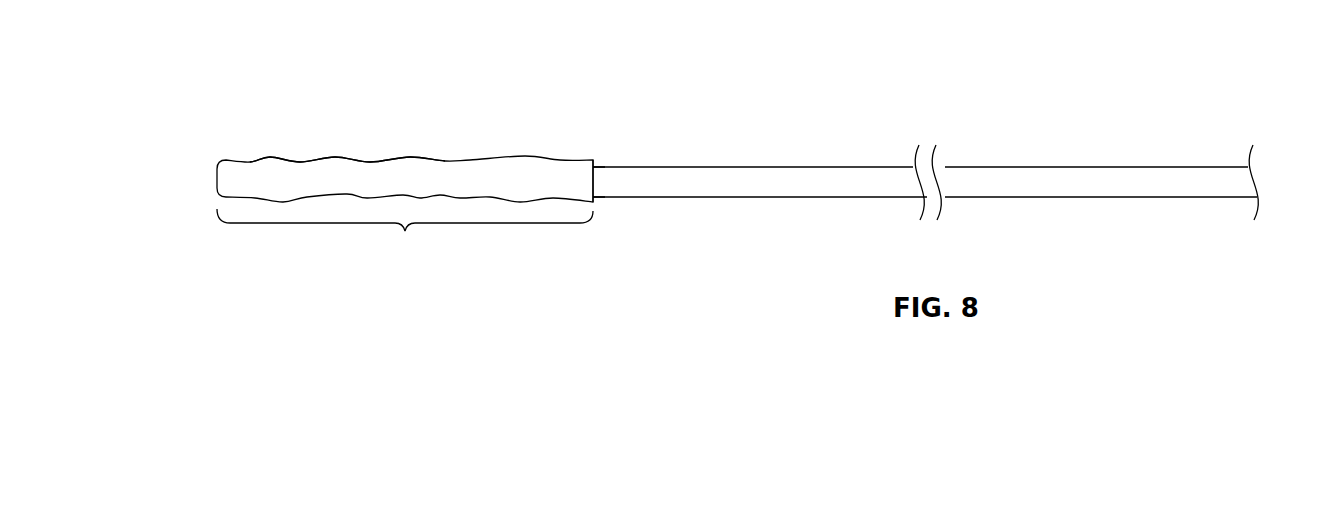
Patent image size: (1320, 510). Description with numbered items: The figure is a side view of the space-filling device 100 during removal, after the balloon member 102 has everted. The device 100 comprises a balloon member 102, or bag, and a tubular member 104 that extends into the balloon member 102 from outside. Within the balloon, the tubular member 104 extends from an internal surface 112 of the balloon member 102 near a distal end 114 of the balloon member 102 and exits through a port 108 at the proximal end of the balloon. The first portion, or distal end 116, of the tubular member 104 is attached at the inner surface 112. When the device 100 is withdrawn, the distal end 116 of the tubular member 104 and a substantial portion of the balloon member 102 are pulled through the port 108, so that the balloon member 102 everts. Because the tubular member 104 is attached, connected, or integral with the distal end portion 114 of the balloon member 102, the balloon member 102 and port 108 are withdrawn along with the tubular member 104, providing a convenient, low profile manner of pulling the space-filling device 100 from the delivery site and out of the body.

The space-filling device 100 is at (289, 100).
The balloon member 102 is at (405, 237).
The tubular member 104 is at (734, 167).
The port 108 is at (211, 199).
The internal surface 112 is at (388, 159).
The distal end 114 is at (587, 151).
The first portion 116 is at (597, 200).